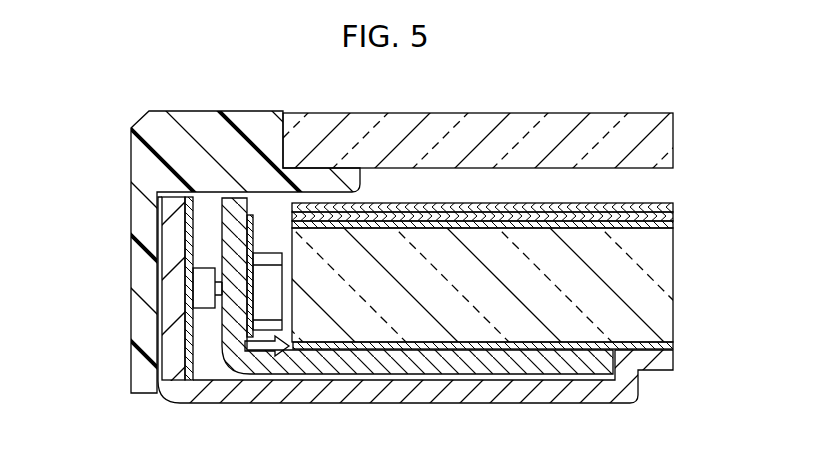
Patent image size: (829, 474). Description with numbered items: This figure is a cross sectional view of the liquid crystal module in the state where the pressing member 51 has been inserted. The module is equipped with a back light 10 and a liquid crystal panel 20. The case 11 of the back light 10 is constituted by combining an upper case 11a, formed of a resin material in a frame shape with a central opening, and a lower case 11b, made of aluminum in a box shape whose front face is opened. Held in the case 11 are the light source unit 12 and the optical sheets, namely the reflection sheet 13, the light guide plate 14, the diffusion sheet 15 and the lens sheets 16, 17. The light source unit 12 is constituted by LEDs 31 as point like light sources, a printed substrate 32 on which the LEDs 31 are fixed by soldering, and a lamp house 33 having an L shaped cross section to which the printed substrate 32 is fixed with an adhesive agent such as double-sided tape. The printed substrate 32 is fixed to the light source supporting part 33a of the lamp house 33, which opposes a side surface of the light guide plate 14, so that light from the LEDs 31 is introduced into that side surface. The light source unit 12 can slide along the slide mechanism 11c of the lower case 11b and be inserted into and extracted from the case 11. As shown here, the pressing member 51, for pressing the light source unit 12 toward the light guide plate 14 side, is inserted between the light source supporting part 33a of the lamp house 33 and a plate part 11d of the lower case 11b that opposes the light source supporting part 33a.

The back light 10 is at (137, 118).
The case 11 is at (53, 353).
The upper case 11a is at (132, 370).
The lower case 11b is at (175, 404).
The slide mechanism 11c is at (423, 382).
The plate part 11d is at (175, 247).
The light source unit 12 is at (219, 214).
The reflection sheet 13 is at (670, 347).
The light guide plate 14 is at (667, 280).
The diffusion sheet 15 is at (672, 223).
The lens sheet 16 is at (672, 216).
The lens sheet 17 is at (672, 207).
The liquid crystal panel 20 is at (667, 140).
The LED 31 is at (267, 287).
The printed substrate 32 is at (250, 322).
The lamp house 33 is at (323, 368).
The light source supporting part 33a is at (236, 200).
The pressing member 51 is at (188, 289).